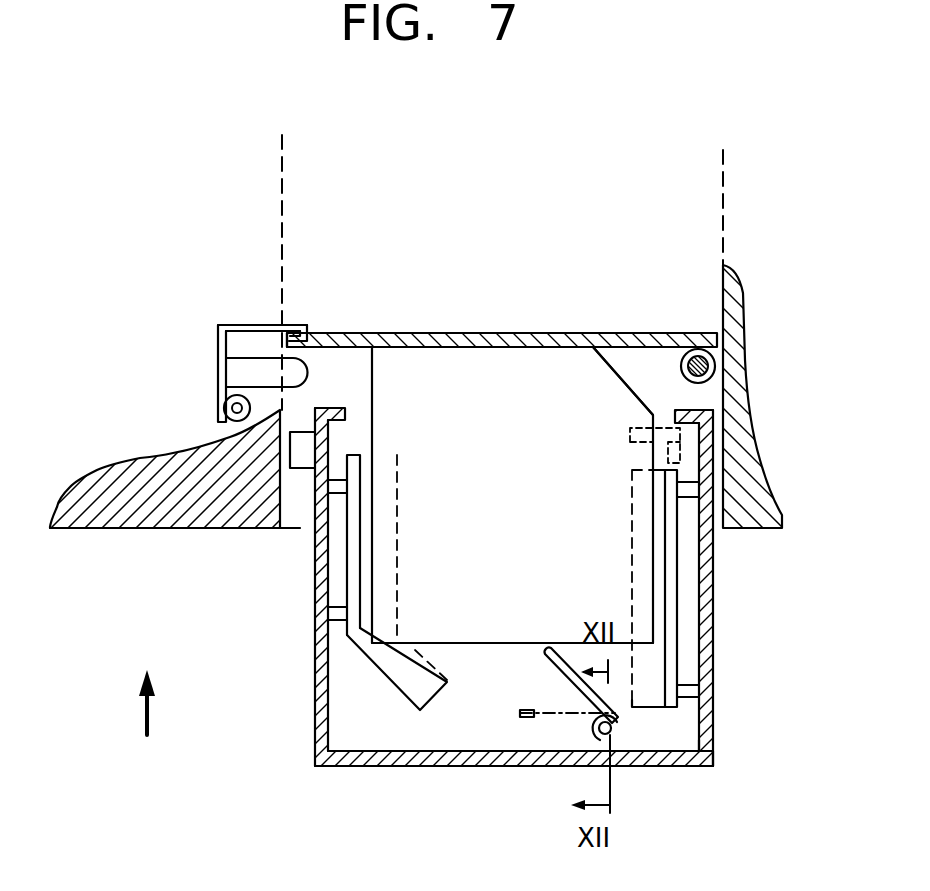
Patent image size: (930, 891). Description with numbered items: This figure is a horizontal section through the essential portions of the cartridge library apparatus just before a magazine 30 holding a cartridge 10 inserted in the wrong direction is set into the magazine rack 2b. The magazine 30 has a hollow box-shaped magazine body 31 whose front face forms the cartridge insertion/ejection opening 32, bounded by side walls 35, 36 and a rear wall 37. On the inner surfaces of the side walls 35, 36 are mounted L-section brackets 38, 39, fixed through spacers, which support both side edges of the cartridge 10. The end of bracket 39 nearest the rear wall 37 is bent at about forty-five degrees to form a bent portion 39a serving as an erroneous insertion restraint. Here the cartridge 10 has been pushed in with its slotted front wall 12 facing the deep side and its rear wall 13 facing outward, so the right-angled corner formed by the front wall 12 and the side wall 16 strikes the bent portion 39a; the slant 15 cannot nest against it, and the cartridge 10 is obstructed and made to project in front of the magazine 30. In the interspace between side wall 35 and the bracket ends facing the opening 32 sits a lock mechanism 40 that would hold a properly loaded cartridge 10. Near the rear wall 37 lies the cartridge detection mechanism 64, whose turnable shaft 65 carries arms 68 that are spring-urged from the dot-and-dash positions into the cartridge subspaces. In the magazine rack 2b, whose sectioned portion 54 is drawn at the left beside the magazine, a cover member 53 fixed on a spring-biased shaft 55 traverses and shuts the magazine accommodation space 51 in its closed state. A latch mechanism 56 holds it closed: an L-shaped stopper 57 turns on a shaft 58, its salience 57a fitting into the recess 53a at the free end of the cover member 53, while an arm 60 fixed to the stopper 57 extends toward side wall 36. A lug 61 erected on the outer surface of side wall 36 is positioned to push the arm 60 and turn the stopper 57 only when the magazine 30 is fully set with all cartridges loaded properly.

The magazine rack 2b is at (130, 530).
The cartridge 10 is at (603, 597).
The front wall 12 is at (460, 650).
The rear wall 13 is at (484, 347).
The slant 15 is at (620, 372).
The side wall 16 is at (375, 556).
The magazine 30 is at (724, 732).
The magazine body 31 is at (712, 768).
The opening 32 is at (357, 420).
The side wall 35 is at (714, 571).
The side wall 36 is at (315, 718).
The rear wall 37 is at (420, 768).
The bracket 38 is at (681, 652).
The bracket 39 is at (347, 595).
The bent portion 39a is at (383, 677).
The lock mechanism 40 is at (683, 444).
The magazine accommodation space 51 is at (723, 205).
The cover member 53 is at (553, 345).
The recess 53a is at (358, 294).
The base end 54 is at (60, 530).
The shaft 55 is at (707, 361).
The latch mechanism 56 is at (238, 318).
The stopper 57 is at (257, 325).
The salience 57a is at (322, 332).
The shaft 58 is at (230, 407).
The arm 60 is at (232, 372).
The lug 61 is at (290, 450).
The cartridge detection mechanism 64 is at (555, 727).
The shaft 65 is at (607, 733).
The arm 68 is at (538, 690).